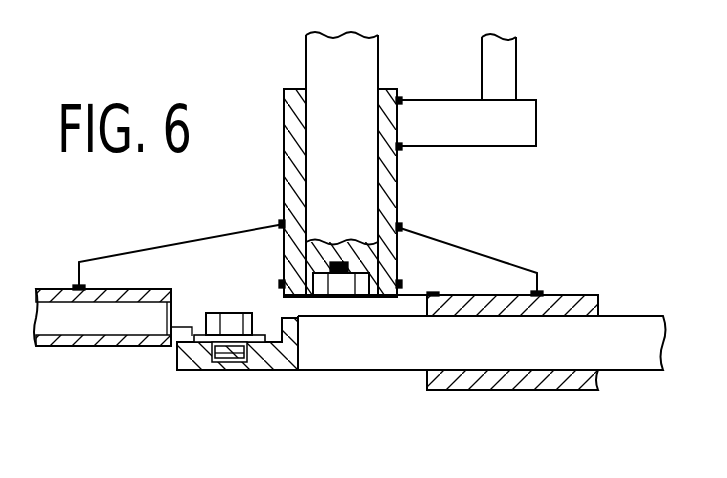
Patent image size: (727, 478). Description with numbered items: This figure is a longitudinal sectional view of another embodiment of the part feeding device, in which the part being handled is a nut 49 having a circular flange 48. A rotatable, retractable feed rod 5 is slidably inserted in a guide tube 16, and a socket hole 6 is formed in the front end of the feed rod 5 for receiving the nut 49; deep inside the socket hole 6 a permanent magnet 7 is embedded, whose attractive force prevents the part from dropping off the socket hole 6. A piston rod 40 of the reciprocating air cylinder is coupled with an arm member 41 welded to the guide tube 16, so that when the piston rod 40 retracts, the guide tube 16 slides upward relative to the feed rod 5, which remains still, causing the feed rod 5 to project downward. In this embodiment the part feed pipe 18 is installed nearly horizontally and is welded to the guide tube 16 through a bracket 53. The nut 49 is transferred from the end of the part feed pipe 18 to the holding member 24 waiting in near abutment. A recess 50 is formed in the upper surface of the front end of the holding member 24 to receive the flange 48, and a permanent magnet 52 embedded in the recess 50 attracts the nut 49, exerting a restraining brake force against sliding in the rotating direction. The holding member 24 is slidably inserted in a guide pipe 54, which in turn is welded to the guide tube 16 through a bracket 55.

The feed rod 5 is at (306, 62).
The guide tube 16 is at (397, 90).
The socket hole 6 is at (338, 297).
The magnet 7 is at (343, 266).
The piston rod 40 is at (517, 56).
The arm member 41 is at (537, 131).
The bracket 53 is at (212, 236).
The bracket 55 is at (482, 250).
The part feed pipe 18 is at (75, 349).
The flange 48 is at (197, 339).
The holding member 24 is at (329, 371).
The guide pipe 54 is at (457, 391).
The recess 50 is at (272, 343).
The nut 49 is at (232, 313).
The magnet 52 is at (229, 371).